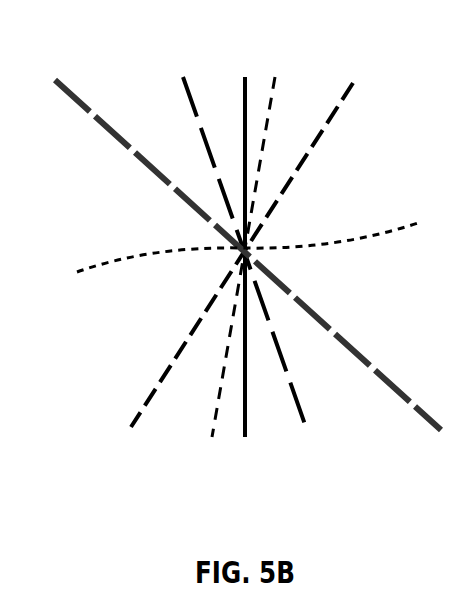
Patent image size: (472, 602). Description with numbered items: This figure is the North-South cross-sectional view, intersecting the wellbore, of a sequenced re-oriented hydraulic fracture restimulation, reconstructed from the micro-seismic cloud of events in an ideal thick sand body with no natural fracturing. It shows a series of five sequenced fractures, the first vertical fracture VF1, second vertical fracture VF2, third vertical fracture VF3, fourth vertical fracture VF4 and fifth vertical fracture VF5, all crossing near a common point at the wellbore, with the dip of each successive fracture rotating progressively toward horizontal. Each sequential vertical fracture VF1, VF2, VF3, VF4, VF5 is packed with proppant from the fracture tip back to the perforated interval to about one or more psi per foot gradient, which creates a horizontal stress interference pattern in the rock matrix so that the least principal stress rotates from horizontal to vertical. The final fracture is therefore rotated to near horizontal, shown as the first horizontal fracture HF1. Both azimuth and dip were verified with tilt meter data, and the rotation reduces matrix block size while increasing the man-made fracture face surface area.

The vertical fracture 1 VF1 is at (239, 233).
The vertical fracture 2 VF2 is at (272, 233).
The vertical fracture 3 VF3 is at (227, 231).
The vertical fracture 4 VF4 is at (275, 245).
The vertical fracture 5 VF5 is at (233, 233).
The horizontal fracture 1 HF1 is at (227, 242).